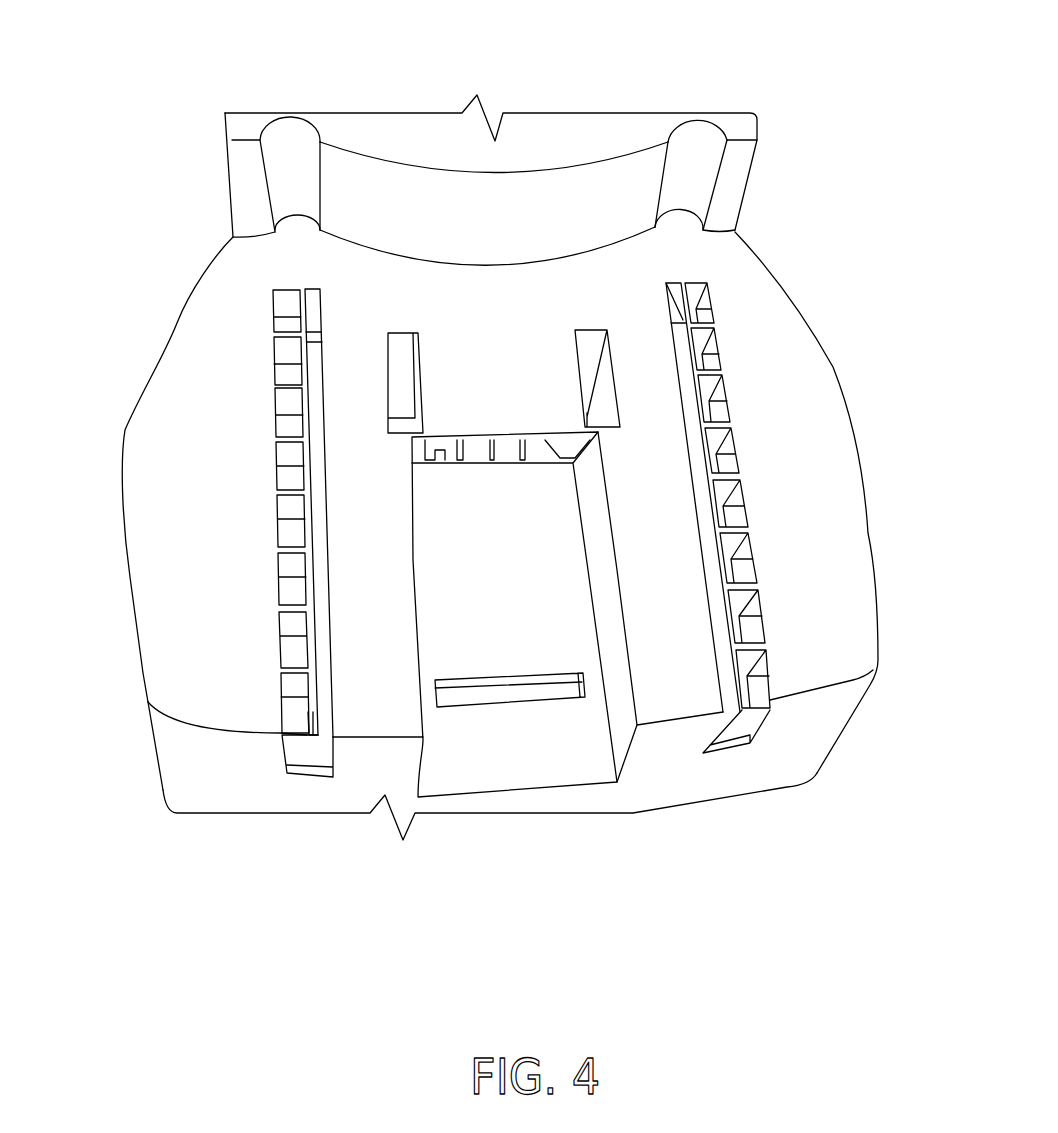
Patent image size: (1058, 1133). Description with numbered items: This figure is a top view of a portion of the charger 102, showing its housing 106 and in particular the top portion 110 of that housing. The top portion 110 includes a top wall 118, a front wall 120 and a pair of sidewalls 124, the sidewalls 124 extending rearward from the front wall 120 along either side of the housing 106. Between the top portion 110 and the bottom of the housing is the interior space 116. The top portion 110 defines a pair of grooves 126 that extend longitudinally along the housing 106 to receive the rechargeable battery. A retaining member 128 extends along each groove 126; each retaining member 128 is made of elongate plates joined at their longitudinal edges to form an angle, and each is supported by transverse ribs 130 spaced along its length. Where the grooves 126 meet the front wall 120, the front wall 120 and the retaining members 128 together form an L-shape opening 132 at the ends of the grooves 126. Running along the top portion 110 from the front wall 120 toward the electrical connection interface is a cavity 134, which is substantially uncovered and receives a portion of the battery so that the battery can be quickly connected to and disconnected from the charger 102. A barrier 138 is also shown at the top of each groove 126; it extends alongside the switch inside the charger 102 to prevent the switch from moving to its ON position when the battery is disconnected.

The charger 102 is at (200, 208).
The housing 106 is at (488, 210).
The top portion 110 is at (808, 277).
The interior space 116 is at (318, 752).
The top wall 118 is at (157, 432).
The front wall 120 is at (180, 742).
The sidewalls 124 is at (130, 590).
The grooves 126 is at (308, 395).
The retaining member 128 is at (290, 643).
The transverse ribs 130 is at (292, 452).
The L-shape opening 132 is at (300, 773).
The cavity 134 is at (512, 567).
The barrier 138 is at (313, 323).